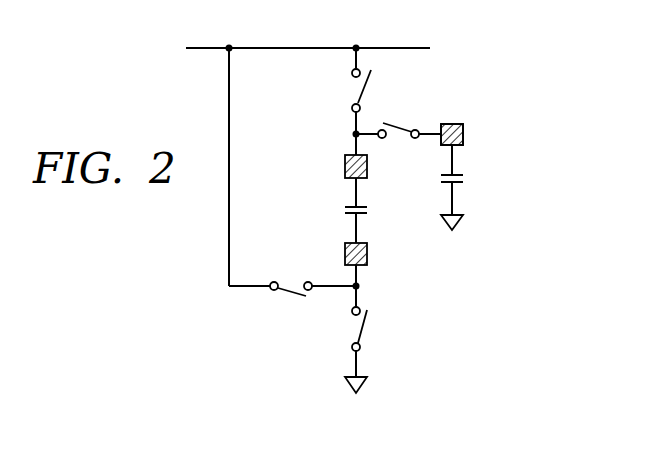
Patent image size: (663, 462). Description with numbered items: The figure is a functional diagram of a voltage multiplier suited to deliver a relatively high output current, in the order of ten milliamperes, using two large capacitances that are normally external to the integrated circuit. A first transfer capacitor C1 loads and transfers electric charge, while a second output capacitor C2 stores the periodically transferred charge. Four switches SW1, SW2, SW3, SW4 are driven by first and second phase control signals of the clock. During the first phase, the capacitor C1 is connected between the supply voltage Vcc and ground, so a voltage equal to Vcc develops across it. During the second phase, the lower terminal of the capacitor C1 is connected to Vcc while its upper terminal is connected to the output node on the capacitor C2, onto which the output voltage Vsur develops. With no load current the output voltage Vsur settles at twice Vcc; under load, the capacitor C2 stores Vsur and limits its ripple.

The supply voltage Vcc is at (356, 31).
The switch SW1 is at (366, 329).
The switch SW2 is at (365, 86).
The switch SW3 is at (291, 287).
The switch SW4 is at (402, 137).
The transfer capacitor C1 is at (366, 213).
The output capacitor C2 is at (464, 183).
The output voltage Vsur is at (470, 137).